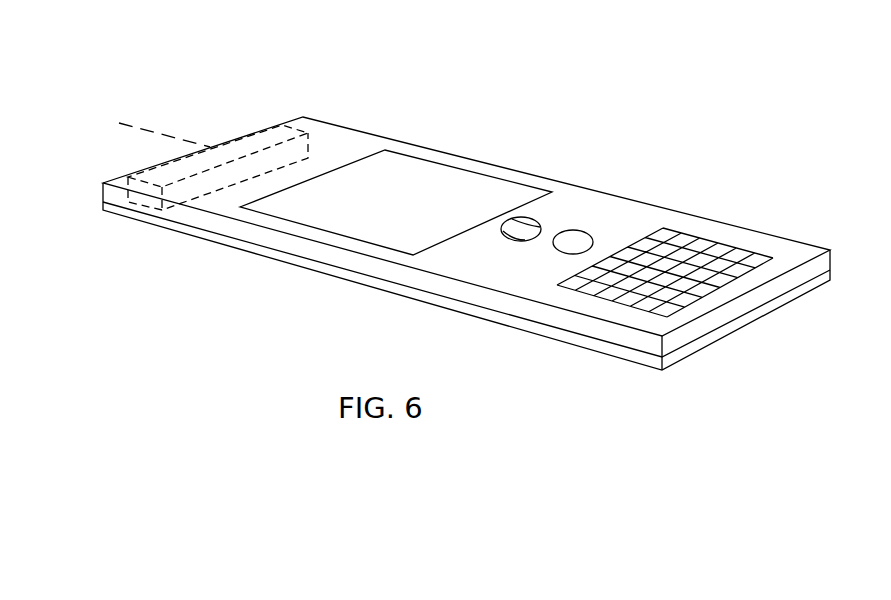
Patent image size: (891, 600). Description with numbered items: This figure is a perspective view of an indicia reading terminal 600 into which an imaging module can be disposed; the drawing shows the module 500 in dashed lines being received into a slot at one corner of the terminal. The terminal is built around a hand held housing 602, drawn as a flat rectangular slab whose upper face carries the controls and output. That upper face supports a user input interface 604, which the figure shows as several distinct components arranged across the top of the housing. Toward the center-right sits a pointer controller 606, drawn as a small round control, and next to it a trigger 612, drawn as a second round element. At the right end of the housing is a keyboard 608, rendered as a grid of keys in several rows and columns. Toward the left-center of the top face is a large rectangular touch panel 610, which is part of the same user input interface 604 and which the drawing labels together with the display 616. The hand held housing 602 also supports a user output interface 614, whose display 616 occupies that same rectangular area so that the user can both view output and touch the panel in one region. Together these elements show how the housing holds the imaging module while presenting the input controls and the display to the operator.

The removable module / card 500 is at (262, 137).
The indicia reading terminal 600 is at (494, 206).
The hand held housing 602 is at (803, 246).
The user input interface 604 is at (470, 269).
The pointer controller 606 is at (537, 220).
The keyboard 608 is at (710, 240).
The touch panel 610 is at (404, 183).
The trigger 612 is at (591, 233).
The user output interface 614 is at (257, 216).
The display 616 is at (442, 163).